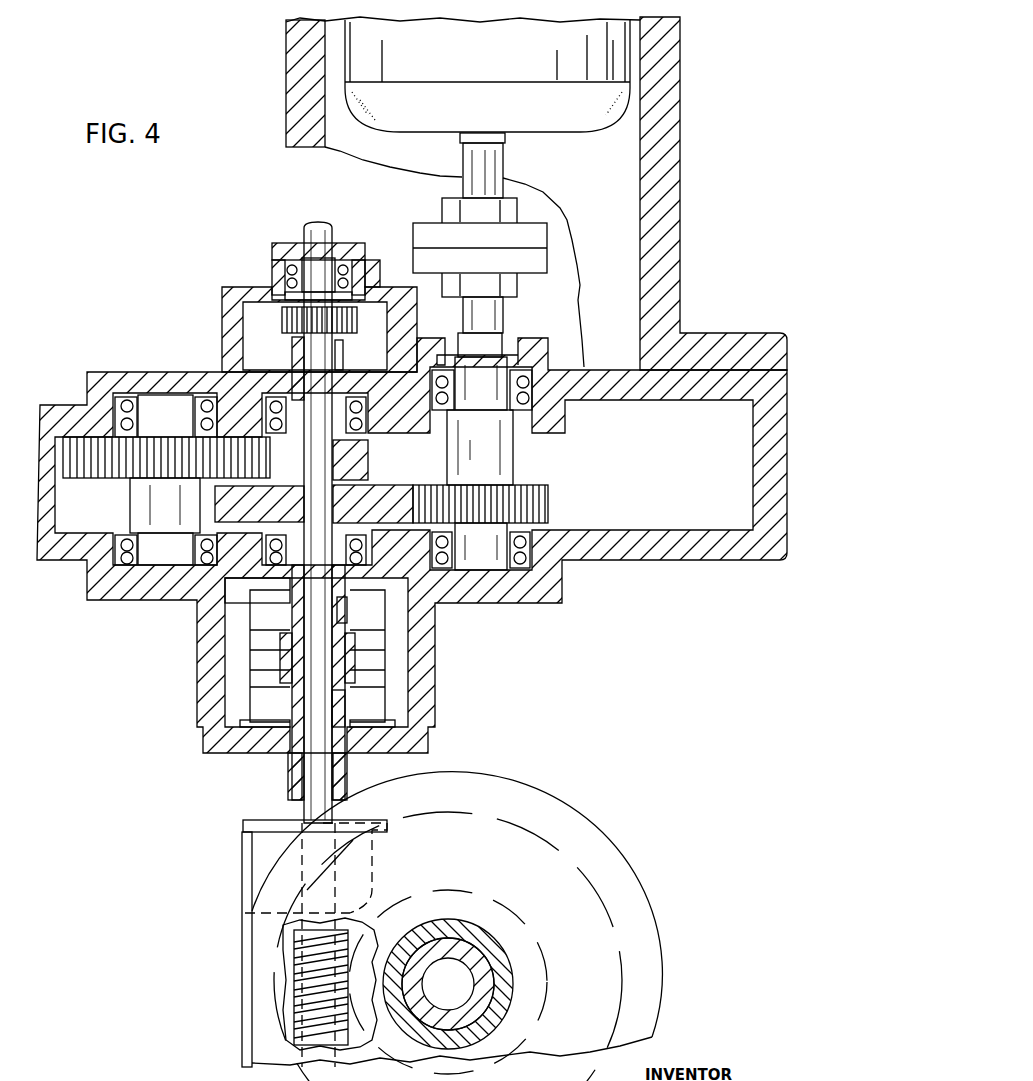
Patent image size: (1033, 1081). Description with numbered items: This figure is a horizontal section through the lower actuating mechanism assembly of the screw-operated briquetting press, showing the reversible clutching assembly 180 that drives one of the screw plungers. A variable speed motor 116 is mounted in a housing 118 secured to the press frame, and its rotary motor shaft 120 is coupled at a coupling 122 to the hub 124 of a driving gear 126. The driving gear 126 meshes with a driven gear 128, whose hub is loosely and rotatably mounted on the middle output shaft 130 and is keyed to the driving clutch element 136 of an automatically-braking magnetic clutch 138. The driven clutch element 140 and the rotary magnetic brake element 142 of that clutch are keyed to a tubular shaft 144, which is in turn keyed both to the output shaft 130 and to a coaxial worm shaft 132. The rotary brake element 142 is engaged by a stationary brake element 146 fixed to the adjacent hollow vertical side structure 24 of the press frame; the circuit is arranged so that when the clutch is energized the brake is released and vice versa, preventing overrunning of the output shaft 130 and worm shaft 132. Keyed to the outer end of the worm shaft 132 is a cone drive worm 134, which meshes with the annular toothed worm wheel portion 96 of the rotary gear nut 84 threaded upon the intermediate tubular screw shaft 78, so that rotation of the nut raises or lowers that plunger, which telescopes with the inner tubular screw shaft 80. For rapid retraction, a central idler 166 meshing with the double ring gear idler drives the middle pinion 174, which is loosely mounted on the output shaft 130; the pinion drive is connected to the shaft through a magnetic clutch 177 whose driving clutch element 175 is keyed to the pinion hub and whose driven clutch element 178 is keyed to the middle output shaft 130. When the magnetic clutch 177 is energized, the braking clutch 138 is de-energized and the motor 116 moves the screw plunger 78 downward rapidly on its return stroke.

The hollow vertical side structure 24 is at (745, 548).
The intermediate tubular screw shaft 78 is at (498, 968).
The inner tubular screw shaft 80 is at (475, 1003).
The rotary gear nut 84 is at (488, 892).
The annular toothed worm wheel portion 96 is at (527, 925).
The variable speed motor 116 is at (628, 95).
The housing 118 is at (668, 186).
The rotary motor shaft 120 is at (503, 188).
The coupling 122 is at (548, 237).
The hub 124 is at (490, 345).
The driving gear 126 is at (525, 492).
The driven gear 128 is at (383, 513).
The middle output shaft 130 is at (307, 713).
The worm shaft 132 is at (305, 768).
The cone drive worm 134 is at (293, 975).
The driving clutch element 136 is at (372, 600).
The automatically-braking magnetic clutch 138 is at (404, 637).
The driven clutch element 140 is at (385, 645).
The rotary magnetic brake element 142 is at (385, 677).
The tubular shaft 144 is at (335, 712).
The stationary brake element 146 is at (255, 695).
The central idler 166 is at (78, 468).
The middle pinion 174 is at (358, 468).
The driving clutch element 175 is at (272, 354).
The magnetic clutch 177 is at (258, 328).
The driven clutch element 178 is at (266, 322).
The reversible clutching assembly 180 is at (276, 589).